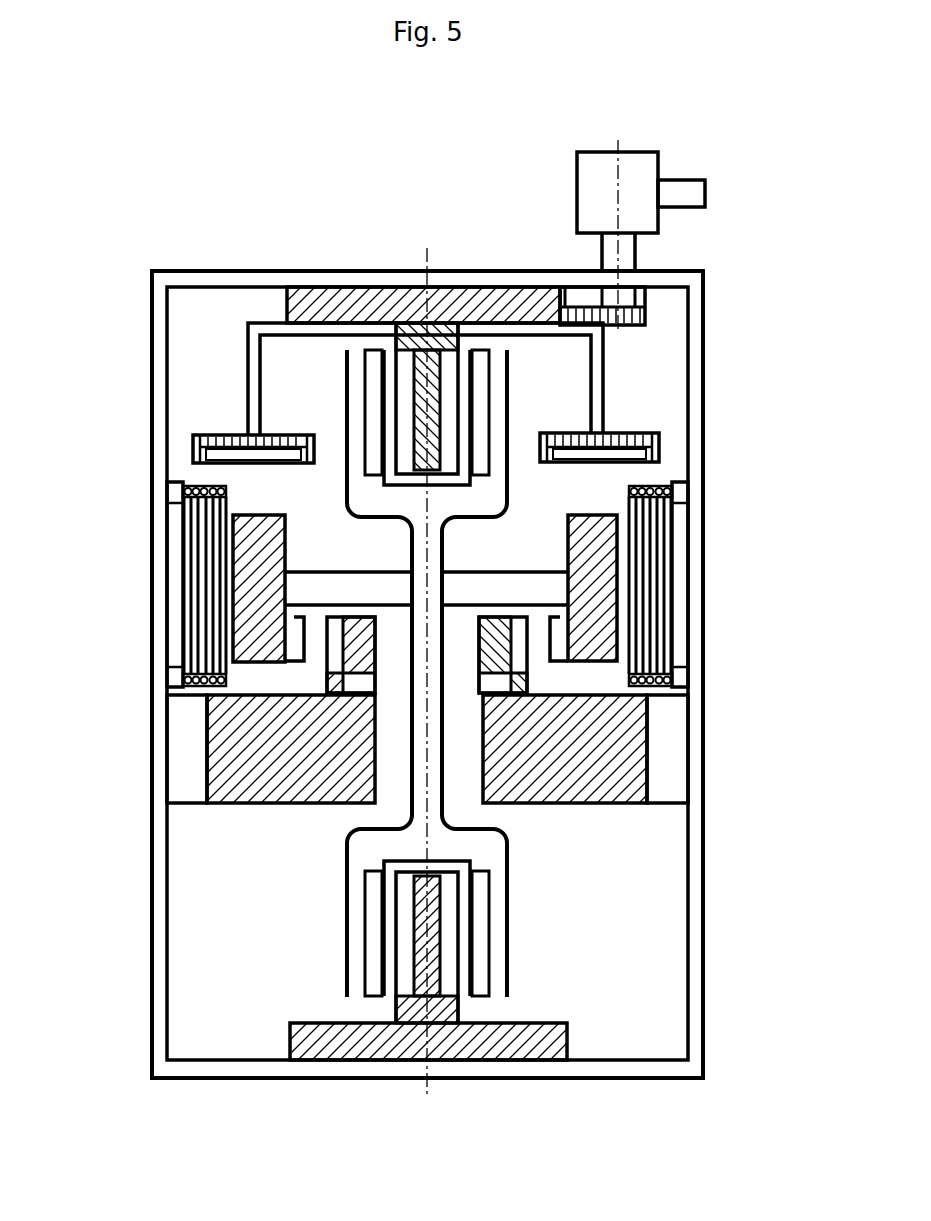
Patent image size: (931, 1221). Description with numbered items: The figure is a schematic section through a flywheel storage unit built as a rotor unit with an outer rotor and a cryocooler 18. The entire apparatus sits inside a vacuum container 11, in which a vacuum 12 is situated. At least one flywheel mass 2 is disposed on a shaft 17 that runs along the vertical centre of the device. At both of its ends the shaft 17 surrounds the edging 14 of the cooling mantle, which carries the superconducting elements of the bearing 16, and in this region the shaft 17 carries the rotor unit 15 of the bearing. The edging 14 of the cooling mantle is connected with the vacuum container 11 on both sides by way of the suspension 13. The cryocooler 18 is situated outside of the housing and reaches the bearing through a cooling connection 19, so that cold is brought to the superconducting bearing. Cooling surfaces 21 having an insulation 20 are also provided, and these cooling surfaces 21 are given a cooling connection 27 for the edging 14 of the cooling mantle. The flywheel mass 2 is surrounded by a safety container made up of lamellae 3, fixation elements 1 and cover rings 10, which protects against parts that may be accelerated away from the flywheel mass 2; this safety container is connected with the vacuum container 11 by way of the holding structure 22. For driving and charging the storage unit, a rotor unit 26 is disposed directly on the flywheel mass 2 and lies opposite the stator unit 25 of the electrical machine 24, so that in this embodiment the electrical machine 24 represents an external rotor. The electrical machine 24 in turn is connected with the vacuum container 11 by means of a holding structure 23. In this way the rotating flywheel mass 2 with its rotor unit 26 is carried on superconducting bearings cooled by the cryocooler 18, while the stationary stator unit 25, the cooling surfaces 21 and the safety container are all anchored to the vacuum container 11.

The fixation elements 1 is at (190, 510).
The flywheel mass 2 is at (270, 523).
The lamellae 3 is at (215, 550).
The cover rings 10 is at (391, 532).
The vacuum container 11 is at (195, 278).
The vacuum 12 is at (190, 348).
The suspension 13 is at (300, 305).
The edging of the cooling mantle 14 is at (413, 350).
The rotor unit of the bearing 15 is at (375, 372).
The superconducting elements of the bearing 16 is at (452, 365).
The shaft 17 is at (503, 365).
The cryocooler 18 is at (640, 175).
The cooling connection 19 is at (618, 313).
The insulation 20 is at (618, 440).
The cooling surfaces 21 is at (617, 453).
The holding structure 22 is at (173, 488).
The holding structure 23 is at (665, 720).
The electrical machine 24 is at (612, 782).
The stator unit 25 is at (332, 676).
The rotor unit 26 is at (283, 661).
The cooling connection 27 is at (600, 377).